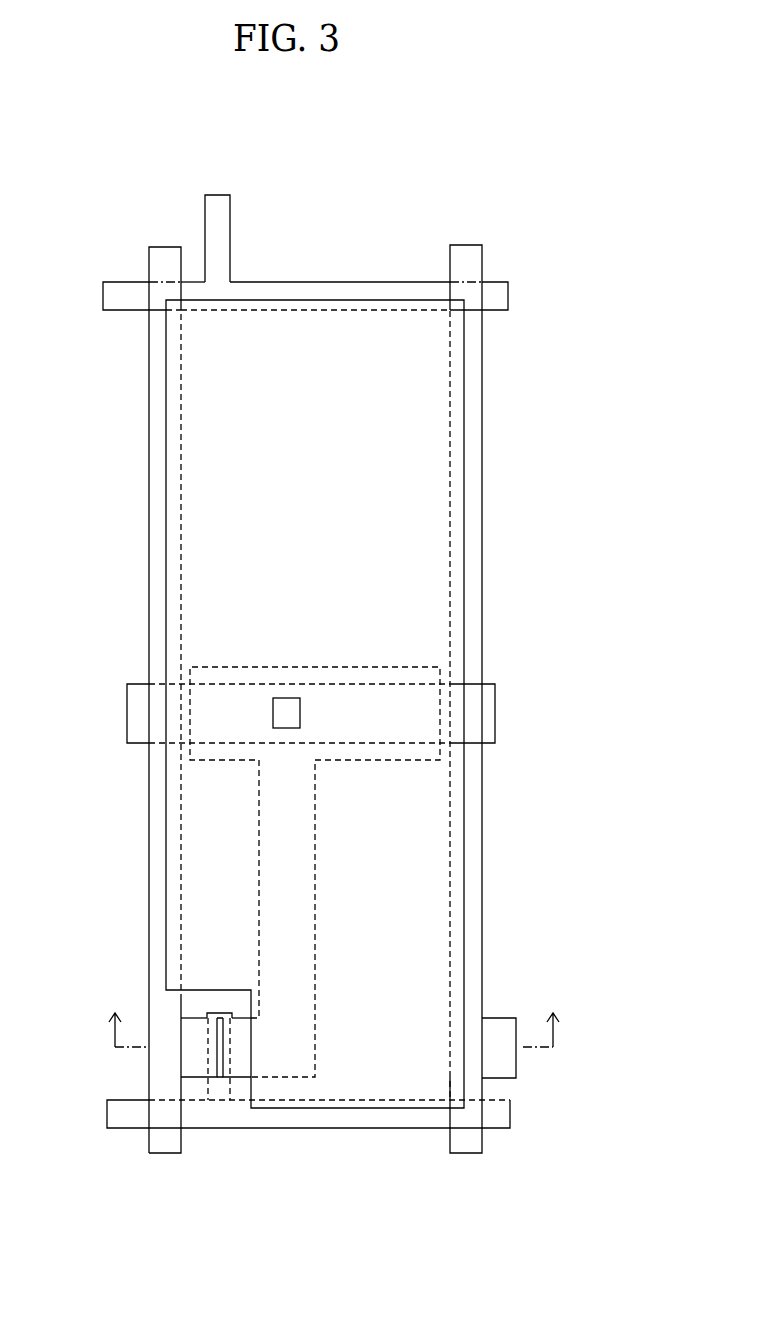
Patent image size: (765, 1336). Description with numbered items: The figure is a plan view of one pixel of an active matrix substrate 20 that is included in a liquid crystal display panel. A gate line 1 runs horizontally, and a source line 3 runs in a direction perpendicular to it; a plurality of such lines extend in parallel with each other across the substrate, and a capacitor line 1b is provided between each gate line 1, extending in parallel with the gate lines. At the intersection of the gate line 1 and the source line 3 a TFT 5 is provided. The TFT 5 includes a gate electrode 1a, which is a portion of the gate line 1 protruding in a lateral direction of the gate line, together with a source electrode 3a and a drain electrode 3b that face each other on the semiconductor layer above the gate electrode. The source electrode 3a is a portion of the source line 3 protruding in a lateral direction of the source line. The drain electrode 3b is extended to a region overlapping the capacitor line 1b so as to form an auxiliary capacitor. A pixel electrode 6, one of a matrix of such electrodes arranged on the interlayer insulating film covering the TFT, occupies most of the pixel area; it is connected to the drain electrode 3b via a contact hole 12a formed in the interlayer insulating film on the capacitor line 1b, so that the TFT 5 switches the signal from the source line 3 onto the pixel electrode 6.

The active matrix substrate 20 is at (147, 168).
The gate line 1 is at (400, 1122).
The gate electrode 1a is at (220, 1092).
The capacitor line 1b is at (487, 713).
The source line 3 is at (155, 508).
The source electrode 3a is at (197, 1068).
The drain electrode 3b is at (240, 1068).
The TFT 5 is at (198, 1045).
The pixel electrode 6 is at (458, 372).
The contact hole 12a is at (286, 699).